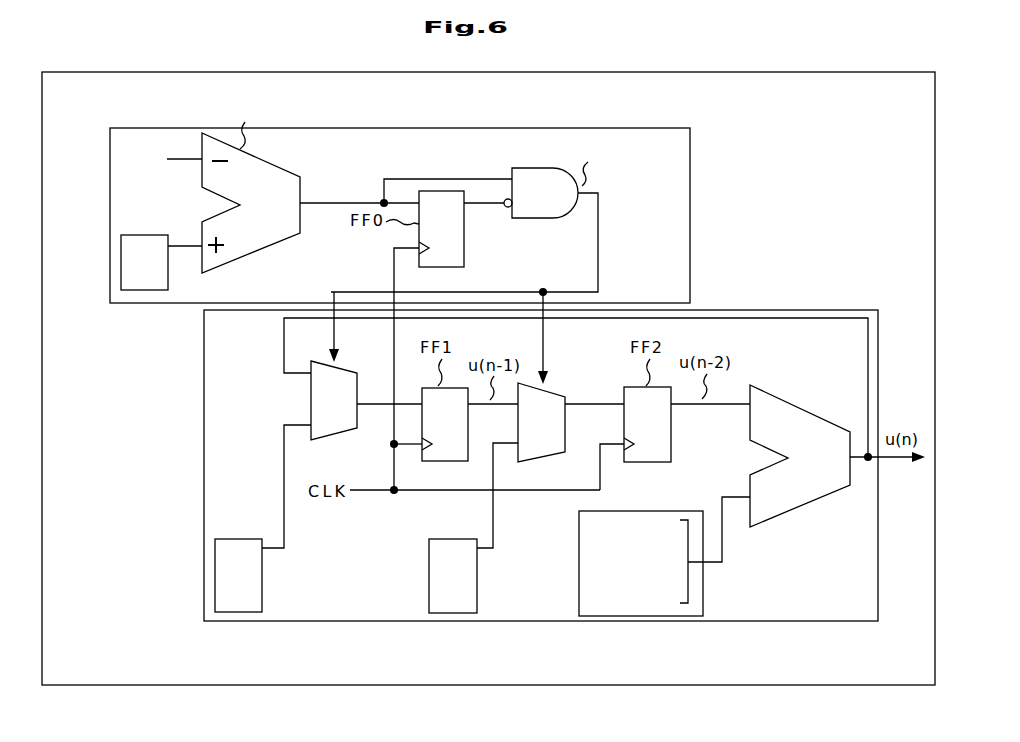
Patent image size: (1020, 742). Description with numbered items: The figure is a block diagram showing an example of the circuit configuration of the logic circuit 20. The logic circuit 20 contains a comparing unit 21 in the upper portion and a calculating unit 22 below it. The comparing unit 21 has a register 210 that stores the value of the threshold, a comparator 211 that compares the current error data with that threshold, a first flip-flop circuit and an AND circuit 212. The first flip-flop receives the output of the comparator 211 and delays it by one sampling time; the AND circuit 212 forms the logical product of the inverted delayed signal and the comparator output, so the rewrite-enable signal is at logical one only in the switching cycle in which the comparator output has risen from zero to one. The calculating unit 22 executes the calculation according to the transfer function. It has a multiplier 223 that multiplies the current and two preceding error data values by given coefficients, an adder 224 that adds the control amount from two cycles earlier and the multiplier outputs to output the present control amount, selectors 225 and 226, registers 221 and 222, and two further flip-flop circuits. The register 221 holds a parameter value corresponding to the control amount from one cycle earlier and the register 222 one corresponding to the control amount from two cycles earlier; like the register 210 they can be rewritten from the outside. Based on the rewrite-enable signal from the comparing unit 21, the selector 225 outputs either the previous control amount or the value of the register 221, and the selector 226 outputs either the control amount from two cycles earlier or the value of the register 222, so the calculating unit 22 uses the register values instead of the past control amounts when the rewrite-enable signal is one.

The logic circuit 20 is at (184, 686).
The comparing unit 21 is at (146, 128).
The register 210 is at (196, 414).
The comparator 211 is at (262, 250).
The AND circuit 212 is at (530, 221).
The calculating unit 22 is at (848, 622).
The register 221 is at (238, 613).
The register 222 is at (451, 614).
The multiplier 223 is at (681, 622).
The adder 224 is at (797, 508).
The selector 225 is at (311, 406).
The selector 226 is at (556, 386).